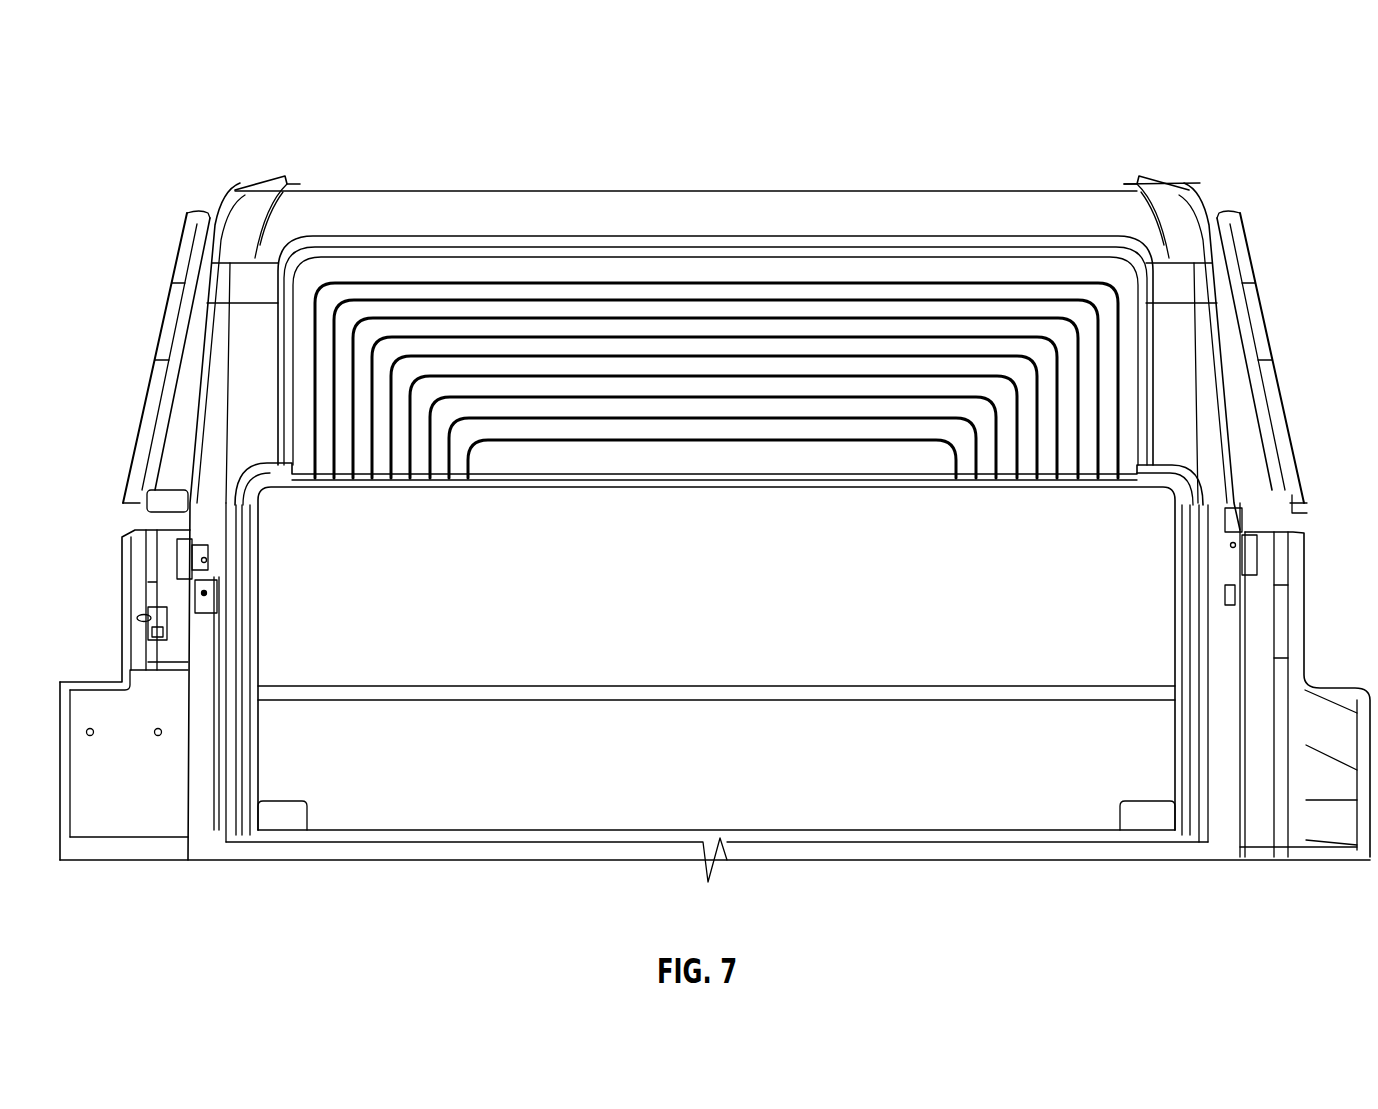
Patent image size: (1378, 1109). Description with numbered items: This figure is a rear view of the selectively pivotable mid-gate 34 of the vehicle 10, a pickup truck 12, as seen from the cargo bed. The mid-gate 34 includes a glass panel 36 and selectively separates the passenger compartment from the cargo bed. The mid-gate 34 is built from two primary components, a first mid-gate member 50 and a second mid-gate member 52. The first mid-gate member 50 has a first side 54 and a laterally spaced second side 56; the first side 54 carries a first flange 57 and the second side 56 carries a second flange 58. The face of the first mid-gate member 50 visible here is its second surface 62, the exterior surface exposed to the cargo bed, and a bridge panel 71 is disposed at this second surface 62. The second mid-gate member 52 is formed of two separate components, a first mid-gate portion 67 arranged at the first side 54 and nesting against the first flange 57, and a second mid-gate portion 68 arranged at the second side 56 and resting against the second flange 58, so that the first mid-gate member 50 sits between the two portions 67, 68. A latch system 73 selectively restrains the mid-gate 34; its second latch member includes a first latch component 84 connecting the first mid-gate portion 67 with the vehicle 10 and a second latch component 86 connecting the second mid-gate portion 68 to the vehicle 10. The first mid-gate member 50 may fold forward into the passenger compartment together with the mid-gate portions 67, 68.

The vehicle 10 is at (1312, 96).
The pickup truck 12 is at (1212, 192).
The selectively pivotable mid-gate 34 is at (1175, 448).
The glass panel 36 is at (658, 300).
The first mid-gate member 50 is at (922, 640).
The second mid-gate member 52 is at (232, 720).
The first side 54 is at (253, 632).
The second side 56 is at (1180, 640).
The first flange 57 is at (242, 490).
The second flange 58 is at (1207, 468).
The second surface 62 is at (843, 662).
The first mid-gate portion 67 is at (245, 765).
The second mid-gate portion 68 is at (1195, 665).
The bridge panel 71 is at (408, 785).
The latch system 73 is at (180, 527).
The first latch component 84 is at (200, 540).
The second latch component 86 is at (1245, 520).